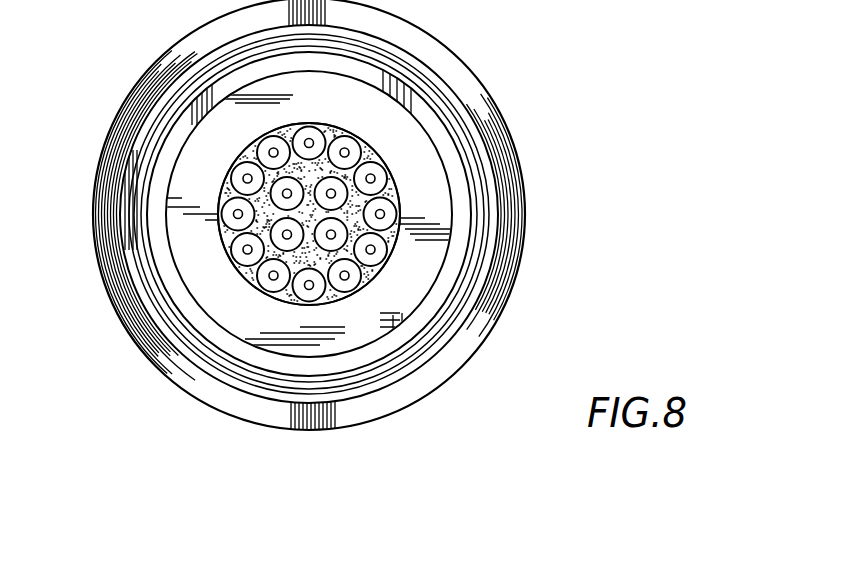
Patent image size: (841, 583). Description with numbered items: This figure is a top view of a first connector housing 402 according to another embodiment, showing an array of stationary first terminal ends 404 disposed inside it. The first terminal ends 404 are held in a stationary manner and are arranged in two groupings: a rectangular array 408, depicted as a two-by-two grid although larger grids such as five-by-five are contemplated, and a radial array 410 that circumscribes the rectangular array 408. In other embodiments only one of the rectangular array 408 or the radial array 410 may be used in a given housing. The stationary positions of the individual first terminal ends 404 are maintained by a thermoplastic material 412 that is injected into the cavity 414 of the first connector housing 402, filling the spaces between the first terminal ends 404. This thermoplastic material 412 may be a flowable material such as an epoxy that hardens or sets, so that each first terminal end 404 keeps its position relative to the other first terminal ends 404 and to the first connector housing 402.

The first connector housing 402 is at (92, 103).
The first terminal ends 404 is at (352, 134).
The rectangular array 408 is at (355, 180).
The radial array 410 is at (400, 191).
The thermoplastic material 412 is at (352, 249).
The cavity 414 is at (350, 298).